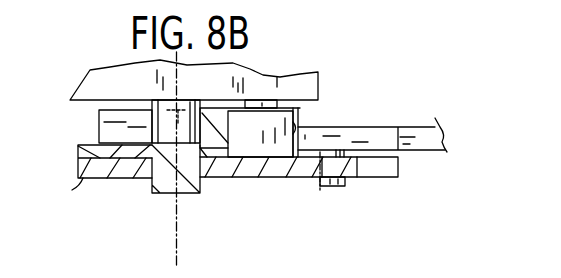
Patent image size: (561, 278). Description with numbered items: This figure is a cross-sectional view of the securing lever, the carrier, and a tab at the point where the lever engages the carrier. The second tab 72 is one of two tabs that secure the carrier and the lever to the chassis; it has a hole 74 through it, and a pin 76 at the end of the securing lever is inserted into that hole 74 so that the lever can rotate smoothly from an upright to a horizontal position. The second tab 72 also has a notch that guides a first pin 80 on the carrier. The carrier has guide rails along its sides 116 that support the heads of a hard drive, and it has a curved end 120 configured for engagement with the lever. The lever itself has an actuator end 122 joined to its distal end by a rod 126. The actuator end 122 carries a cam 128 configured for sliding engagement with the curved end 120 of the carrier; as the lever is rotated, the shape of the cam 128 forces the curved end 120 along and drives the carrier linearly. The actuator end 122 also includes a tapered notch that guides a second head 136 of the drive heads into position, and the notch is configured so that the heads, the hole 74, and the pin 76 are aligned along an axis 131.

The second tab 72 is at (252, 178).
The hole 74 is at (150, 178).
The pin 76 is at (171, 186).
The first pin 80 is at (325, 187).
The side 116 is at (381, 127).
The curved end 120 is at (297, 126).
The actuator end 122 is at (98, 152).
The rod 126 is at (260, 107).
The cam 128 is at (283, 140).
The axis 131 is at (178, 237).
The second head 136 is at (172, 128).